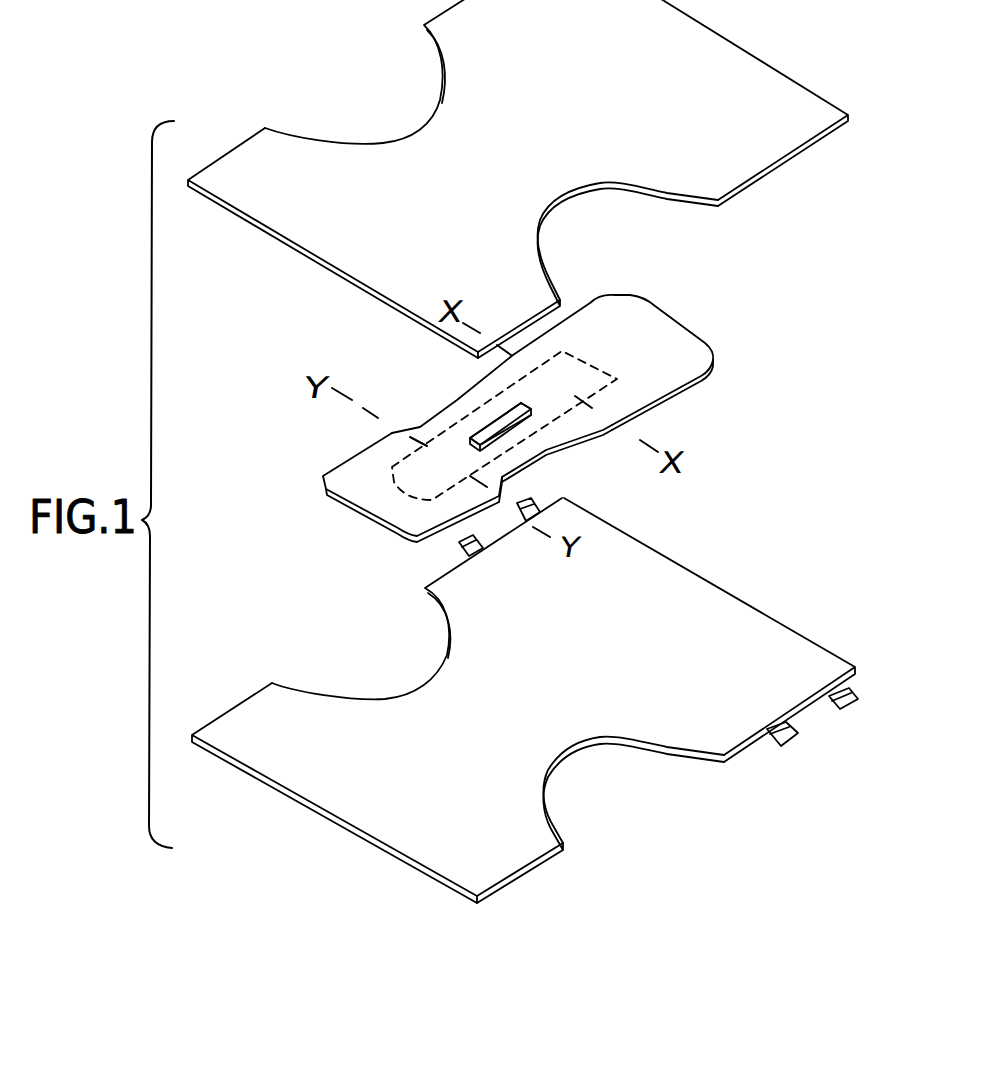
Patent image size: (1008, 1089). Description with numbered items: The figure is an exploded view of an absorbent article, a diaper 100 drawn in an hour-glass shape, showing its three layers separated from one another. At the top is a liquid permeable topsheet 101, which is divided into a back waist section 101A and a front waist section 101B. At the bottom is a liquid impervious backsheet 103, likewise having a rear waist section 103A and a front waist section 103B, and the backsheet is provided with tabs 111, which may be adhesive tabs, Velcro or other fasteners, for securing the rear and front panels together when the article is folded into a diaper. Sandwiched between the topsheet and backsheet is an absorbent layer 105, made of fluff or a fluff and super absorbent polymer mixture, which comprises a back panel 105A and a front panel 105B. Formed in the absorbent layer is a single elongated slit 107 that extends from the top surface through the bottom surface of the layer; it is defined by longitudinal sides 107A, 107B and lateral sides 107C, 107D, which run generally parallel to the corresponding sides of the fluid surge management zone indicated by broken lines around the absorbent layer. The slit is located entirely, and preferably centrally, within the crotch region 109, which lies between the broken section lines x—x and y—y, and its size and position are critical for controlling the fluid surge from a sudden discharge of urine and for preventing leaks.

The diaper 100 is at (771, 416).
The topsheet 101 is at (305, 258).
The back waist section 101A is at (735, 156).
The front waist section 101B is at (262, 175).
The backsheet 103 is at (350, 835).
The rear waist section 103A is at (722, 740).
The front waist section 103B is at (265, 727).
The absorbent layer 105 is at (366, 522).
The back panel 105A is at (640, 331).
The front panel 105B is at (345, 483).
The slit 107 is at (530, 413).
The longitudinal side 107A is at (498, 419).
The longitudinal side 107B is at (508, 432).
The lateral side 107C is at (482, 487).
The lateral side 107D is at (525, 405).
The crotch region 109 is at (474, 391).
The tabs 111 is at (520, 504).